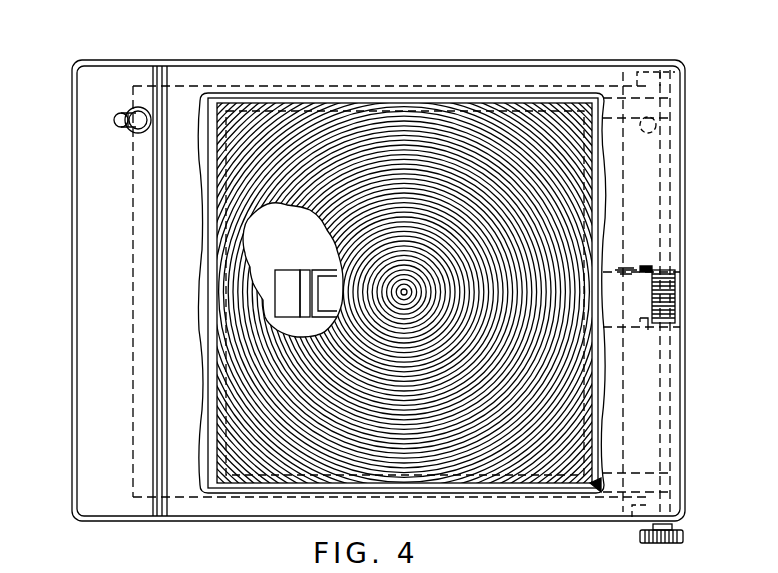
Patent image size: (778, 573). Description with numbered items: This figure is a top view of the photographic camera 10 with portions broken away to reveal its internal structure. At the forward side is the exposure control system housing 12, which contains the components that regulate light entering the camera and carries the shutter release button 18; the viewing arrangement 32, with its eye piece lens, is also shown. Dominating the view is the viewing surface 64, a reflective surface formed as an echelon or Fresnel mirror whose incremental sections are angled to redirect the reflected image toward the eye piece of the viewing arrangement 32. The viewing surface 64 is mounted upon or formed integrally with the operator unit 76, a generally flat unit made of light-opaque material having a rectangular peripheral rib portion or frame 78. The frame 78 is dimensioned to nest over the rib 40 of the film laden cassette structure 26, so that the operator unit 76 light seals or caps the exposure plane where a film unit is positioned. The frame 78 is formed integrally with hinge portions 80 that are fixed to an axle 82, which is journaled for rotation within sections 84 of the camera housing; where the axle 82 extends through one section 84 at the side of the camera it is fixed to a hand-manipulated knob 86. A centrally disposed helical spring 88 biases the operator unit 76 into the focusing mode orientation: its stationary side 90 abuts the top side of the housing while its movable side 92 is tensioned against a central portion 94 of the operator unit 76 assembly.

The photographic camera 10 is at (499, 57).
The exposure control system housing 12 is at (74, 262).
The shutter release button 18 is at (113, 119).
The film laden cassette structure 26 is at (185, 490).
The viewing arrangement 32 is at (293, 268).
The rib of film cassette 40 is at (457, 95).
The viewing surface 64 is at (410, 136).
The operator unit 76 is at (597, 489).
The peripheral rib portion or frame 78 is at (288, 96).
The hinge portions 80 is at (686, 126).
The axle 82 is at (686, 162).
The housing sections 84 is at (662, 70).
The hand-manipulated knob 86 is at (684, 537).
The helical spring 88 is at (672, 292).
The stationary side of spring 90 is at (670, 327).
The movable side of spring 92 is at (652, 270).
The central portion of operator unit 94 is at (628, 268).